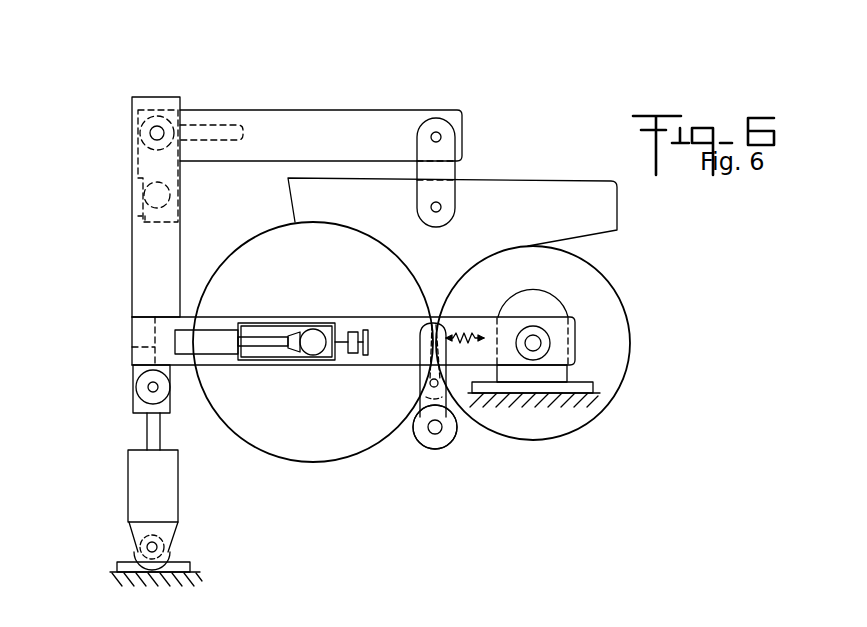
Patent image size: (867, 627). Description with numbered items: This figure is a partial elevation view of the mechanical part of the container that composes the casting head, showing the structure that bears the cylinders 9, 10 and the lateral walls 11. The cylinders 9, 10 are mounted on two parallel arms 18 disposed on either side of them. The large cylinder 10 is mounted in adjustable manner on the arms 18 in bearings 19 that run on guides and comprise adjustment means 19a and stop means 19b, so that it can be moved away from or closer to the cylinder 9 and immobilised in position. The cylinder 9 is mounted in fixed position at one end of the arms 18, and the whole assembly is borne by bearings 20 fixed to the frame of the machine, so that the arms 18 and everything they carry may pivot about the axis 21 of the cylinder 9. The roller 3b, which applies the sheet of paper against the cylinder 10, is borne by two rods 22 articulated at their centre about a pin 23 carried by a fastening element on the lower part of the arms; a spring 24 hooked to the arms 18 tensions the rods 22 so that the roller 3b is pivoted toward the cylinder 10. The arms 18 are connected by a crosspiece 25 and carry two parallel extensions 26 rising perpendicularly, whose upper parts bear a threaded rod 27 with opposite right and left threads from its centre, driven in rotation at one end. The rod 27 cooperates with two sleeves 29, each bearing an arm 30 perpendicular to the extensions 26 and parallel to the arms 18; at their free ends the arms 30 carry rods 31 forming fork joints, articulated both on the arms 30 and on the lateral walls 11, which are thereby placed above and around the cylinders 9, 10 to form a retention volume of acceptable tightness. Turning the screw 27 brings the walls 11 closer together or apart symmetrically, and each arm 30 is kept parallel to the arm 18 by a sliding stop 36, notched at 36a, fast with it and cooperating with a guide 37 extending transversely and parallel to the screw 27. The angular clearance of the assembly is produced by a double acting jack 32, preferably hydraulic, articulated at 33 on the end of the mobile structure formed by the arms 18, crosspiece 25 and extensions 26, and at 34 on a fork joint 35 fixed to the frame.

The roller 3b is at (443, 443).
The cylinder 9 is at (605, 300).
The large cylinder 10 is at (273, 427).
The lateral wall 11 is at (550, 197).
The arm 18 is at (379, 362).
The bearing 19 is at (297, 327).
The adjustment means 19a is at (217, 333).
The stop means 19b is at (367, 328).
The bearing 20 is at (560, 377).
The axis of the cylinder 21 is at (535, 345).
The rod 22 is at (423, 433).
The pin 23 is at (430, 387).
The spring 24 is at (470, 330).
The crosspiece 25 is at (152, 347).
The extension 26 is at (148, 288).
The threaded rod 27 is at (150, 137).
The sleeve 29 is at (162, 114).
The arm 30 is at (323, 122).
The rod 31 is at (447, 145).
The double acting jack 32 is at (140, 485).
The articulation 33 is at (150, 388).
The articulation 34 is at (160, 547).
The fork joint 35 is at (115, 565).
The sliding stop 36 is at (178, 173).
The notch 36a is at (132, 225).
The guide 37 is at (143, 202).